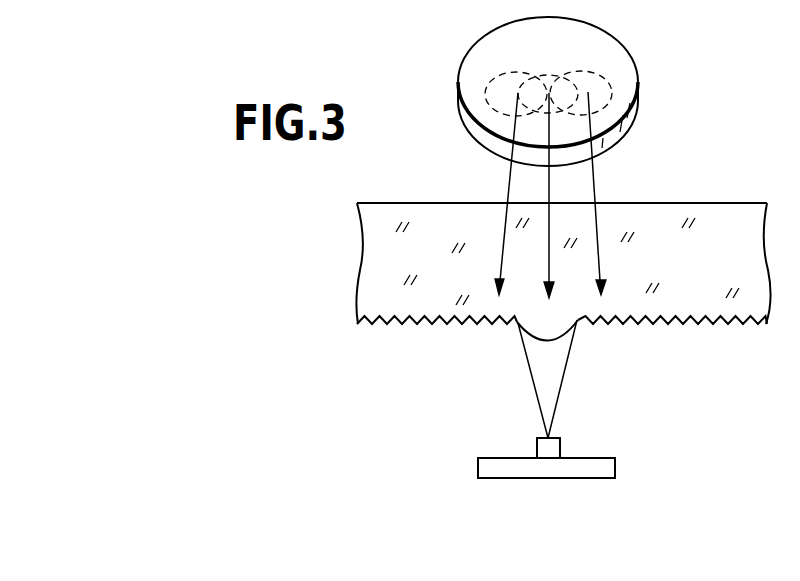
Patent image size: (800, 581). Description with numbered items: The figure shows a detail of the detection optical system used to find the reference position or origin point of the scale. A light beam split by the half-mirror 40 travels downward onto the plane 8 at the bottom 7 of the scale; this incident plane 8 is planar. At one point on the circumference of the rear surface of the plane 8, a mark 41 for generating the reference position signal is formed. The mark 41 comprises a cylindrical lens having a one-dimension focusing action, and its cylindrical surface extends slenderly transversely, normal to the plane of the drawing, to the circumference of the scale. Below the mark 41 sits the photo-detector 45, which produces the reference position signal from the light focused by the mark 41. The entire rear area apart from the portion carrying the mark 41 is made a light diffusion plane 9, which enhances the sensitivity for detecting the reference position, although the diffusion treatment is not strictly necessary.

The bottom of the scale 7 is at (738, 220).
The plane 8 is at (707, 200).
The light diffusion plane 9 is at (713, 322).
The half-mirror 40 is at (622, 76).
The mark 41 is at (558, 338).
The photo-detector 45 is at (593, 457).